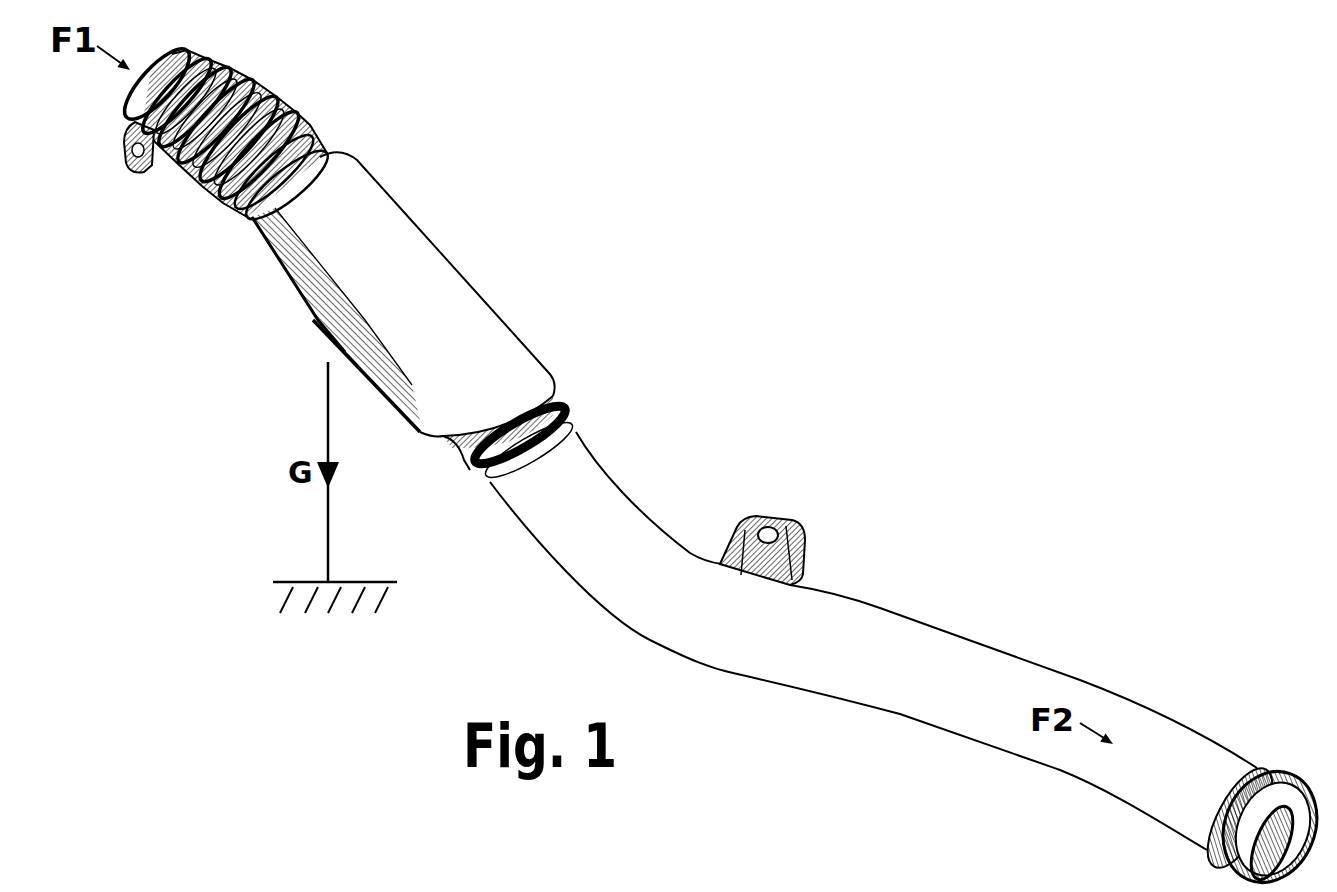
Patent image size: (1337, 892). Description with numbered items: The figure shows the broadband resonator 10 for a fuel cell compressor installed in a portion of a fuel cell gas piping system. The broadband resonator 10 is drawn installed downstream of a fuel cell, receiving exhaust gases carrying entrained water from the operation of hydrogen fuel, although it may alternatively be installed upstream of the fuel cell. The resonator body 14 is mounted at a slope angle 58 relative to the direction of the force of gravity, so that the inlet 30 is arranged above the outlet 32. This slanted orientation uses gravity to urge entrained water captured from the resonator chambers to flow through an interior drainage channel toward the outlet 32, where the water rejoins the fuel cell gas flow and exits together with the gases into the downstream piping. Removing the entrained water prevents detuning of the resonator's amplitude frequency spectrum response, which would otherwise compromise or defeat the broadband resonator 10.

The broadband resonator 10 is at (494, 254).
The resonator housing 14 is at (380, 228).
The inlet 30 is at (340, 109).
The outlet 32 is at (580, 384).
The slope angle 58 is at (354, 383).